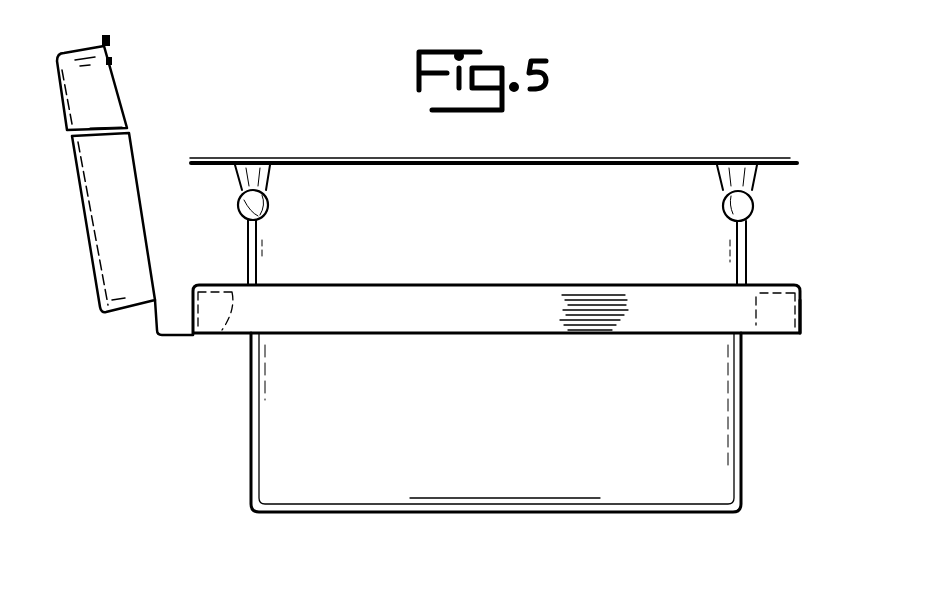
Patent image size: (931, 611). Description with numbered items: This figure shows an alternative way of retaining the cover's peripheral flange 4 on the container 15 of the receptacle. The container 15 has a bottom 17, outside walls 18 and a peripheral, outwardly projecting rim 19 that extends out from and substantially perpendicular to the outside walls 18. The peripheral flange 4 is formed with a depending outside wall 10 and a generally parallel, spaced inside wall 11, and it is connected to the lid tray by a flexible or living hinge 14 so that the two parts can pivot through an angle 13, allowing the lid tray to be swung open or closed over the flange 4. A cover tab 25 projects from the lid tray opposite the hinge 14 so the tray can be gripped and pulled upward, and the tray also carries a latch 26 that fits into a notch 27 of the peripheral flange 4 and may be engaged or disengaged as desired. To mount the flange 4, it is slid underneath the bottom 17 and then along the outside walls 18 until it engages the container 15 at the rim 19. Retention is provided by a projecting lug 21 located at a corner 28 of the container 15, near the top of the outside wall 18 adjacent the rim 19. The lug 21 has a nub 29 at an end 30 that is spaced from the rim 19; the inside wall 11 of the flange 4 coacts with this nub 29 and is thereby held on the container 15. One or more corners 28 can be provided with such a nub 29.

The peripheral flange 4 is at (341, 325).
The outside wall 10 is at (456, 324).
The inside wall 11 is at (238, 302).
The angle 13 is at (161, 229).
The hinge 14 is at (157, 342).
The container 15 is at (702, 413).
The bottom 17 is at (611, 516).
The outside walls 18 is at (603, 412).
The rim 19 is at (194, 161).
The lug 21 is at (238, 205).
The cover tab 25 is at (111, 40).
The latch 26 is at (113, 61).
The notch 27 is at (806, 326).
The corner 28 is at (762, 177).
The nub 29 is at (270, 205).
The end 30 is at (259, 222).